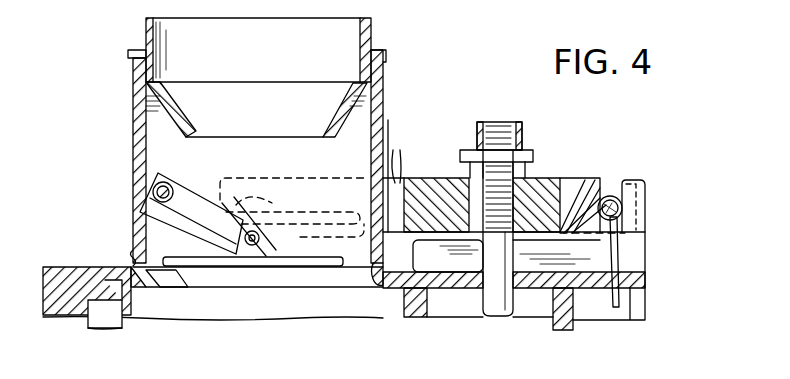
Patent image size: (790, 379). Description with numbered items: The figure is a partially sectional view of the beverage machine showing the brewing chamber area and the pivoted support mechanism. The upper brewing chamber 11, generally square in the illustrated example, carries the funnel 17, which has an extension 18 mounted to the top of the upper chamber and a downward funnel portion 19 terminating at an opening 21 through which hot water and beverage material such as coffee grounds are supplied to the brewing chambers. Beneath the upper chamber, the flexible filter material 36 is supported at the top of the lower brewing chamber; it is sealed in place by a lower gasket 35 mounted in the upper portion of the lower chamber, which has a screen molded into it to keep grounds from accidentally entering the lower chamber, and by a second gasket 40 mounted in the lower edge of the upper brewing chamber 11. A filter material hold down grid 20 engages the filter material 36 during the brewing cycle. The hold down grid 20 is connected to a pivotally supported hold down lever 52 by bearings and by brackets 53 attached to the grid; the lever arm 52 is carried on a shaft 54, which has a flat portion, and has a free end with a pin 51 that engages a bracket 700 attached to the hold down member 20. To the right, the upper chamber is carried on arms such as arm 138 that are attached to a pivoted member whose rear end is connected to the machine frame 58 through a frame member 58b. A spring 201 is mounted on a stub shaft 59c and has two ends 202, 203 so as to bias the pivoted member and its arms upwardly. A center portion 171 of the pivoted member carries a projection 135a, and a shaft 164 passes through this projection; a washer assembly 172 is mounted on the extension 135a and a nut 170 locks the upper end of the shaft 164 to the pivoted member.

The upper brewing chamber 11 is at (135, 128).
The funnel 17 is at (146, 28).
The extension 18 is at (128, 54).
The downward funnel portion 19 is at (174, 120).
The filter material hold down grid 20 is at (197, 262).
The opening 21 is at (239, 137).
The lower gasket 35 is at (133, 275).
The filter material 36 is at (178, 268).
The second gasket 40 is at (133, 252).
The pin 51 is at (252, 248).
The hold down lever 52 is at (148, 200).
The brackets 53 is at (148, 231).
The shaft 54 is at (158, 185).
The frame 58 is at (648, 281).
The frame member 58b is at (642, 192).
The stub shaft 59c is at (616, 196).
The projection 135a is at (533, 158).
The arm 138 is at (393, 182).
The shaft 164 is at (487, 288).
The nut 170 is at (519, 134).
The center portion 171 is at (411, 182).
The washer assembly 172 is at (464, 150).
The spring 201 is at (552, 180).
The spring end 202 is at (620, 250).
The spring end 203 is at (530, 238).
The bracket 700 is at (268, 240).